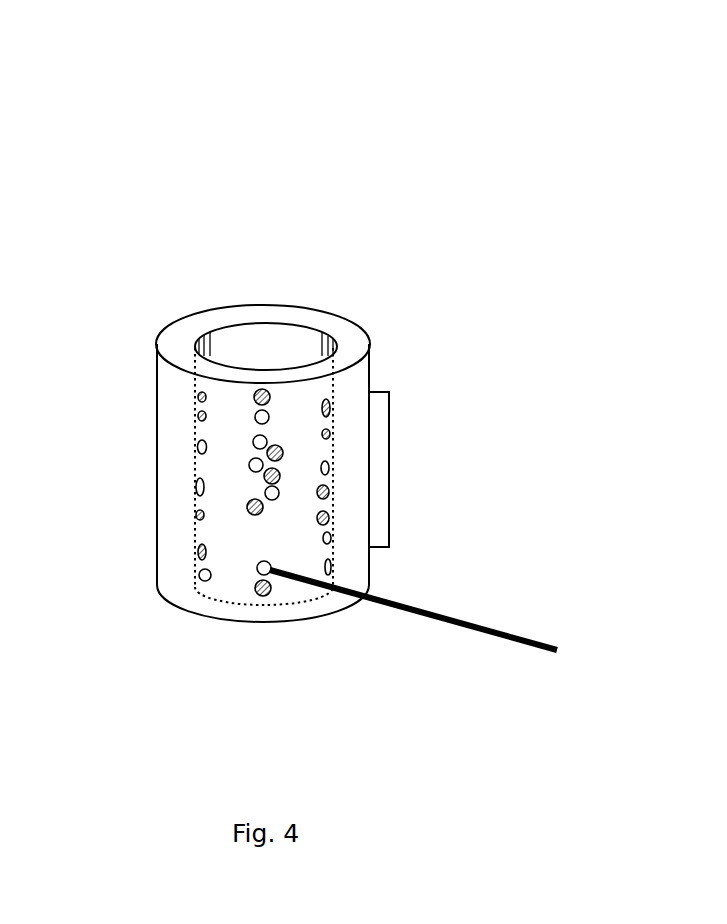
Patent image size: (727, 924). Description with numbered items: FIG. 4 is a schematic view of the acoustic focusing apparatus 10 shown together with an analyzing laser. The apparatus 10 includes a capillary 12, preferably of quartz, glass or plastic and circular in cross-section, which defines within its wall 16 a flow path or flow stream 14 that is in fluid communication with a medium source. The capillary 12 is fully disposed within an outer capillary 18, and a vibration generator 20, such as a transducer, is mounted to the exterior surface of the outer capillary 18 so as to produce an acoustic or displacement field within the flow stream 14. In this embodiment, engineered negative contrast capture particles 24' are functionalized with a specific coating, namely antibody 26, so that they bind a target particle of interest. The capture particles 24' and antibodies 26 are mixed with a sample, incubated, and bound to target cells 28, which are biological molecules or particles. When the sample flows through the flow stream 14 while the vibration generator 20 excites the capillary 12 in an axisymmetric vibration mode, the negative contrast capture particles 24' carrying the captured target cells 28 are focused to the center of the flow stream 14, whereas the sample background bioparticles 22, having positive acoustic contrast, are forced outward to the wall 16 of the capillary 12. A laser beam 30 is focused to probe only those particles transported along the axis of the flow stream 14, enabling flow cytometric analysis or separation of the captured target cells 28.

The apparatus 10 is at (360, 182).
The capillary 12 is at (218, 327).
The flow stream 14 is at (262, 353).
The wall 16 is at (313, 340).
The outer capillary 18 is at (155, 413).
The vibration generator 20 is at (380, 392).
The bioparticles 22 is at (197, 481).
The engineered negative contrast capture particles 24' is at (188, 486).
The antibody 26 is at (258, 411).
The target cells 28 is at (257, 419).
The laser beam 30 is at (463, 622).